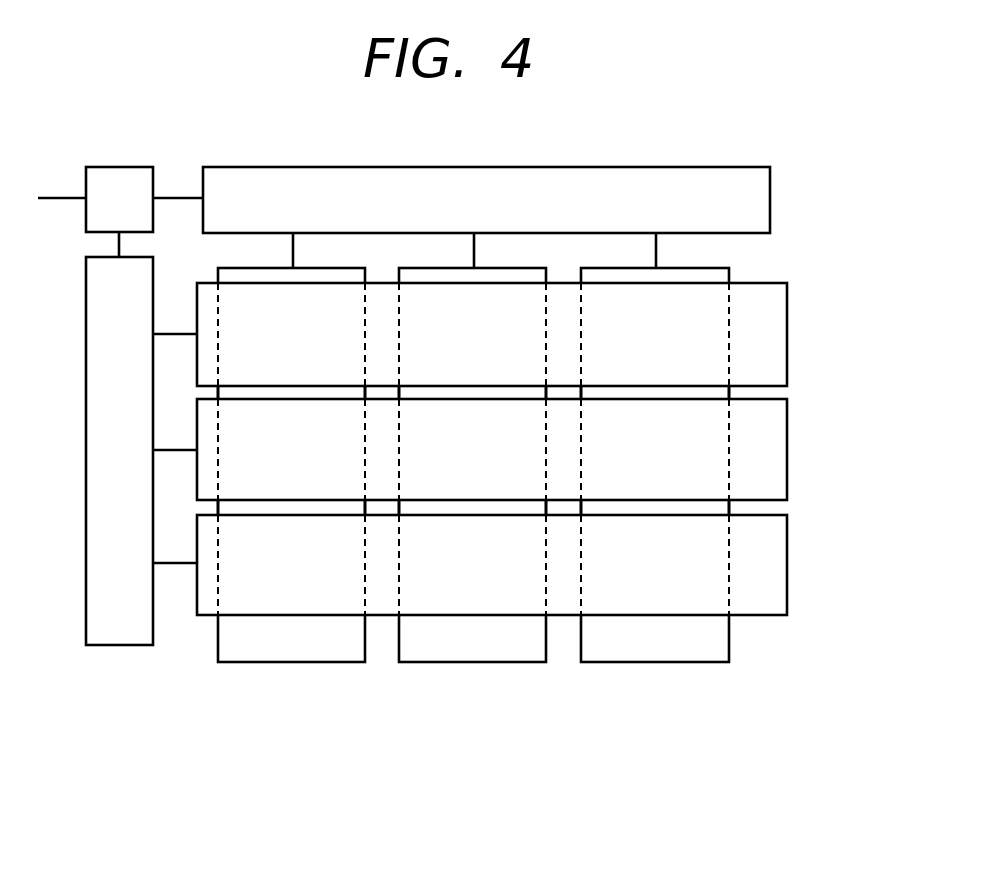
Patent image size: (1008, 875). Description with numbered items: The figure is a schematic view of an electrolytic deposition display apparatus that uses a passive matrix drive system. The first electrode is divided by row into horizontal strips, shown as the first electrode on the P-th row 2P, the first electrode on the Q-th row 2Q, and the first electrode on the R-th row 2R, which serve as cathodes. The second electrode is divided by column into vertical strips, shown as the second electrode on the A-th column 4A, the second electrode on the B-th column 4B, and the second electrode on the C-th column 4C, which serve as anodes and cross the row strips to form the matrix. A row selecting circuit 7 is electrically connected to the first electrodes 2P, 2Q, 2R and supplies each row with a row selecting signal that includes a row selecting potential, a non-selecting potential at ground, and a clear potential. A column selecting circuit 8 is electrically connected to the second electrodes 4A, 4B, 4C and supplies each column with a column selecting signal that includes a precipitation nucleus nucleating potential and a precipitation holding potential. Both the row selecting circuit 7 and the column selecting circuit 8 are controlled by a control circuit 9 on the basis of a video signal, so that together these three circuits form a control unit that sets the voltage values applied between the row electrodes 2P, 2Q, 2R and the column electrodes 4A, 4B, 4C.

The control circuit 9 is at (117, 177).
The column selecting circuit 8 is at (693, 180).
The row selecting circuit 7 is at (118, 636).
The second electrode on the A-th column 4A is at (298, 647).
The second electrode on the B-th column 4B is at (478, 647).
The second electrode on the C-th column 4C is at (660, 647).
The first electrode on the P-th row 2P is at (767, 332).
The first electrode on the Q-th row 2Q is at (767, 451).
The first electrode on the R-th row 2R is at (767, 565).